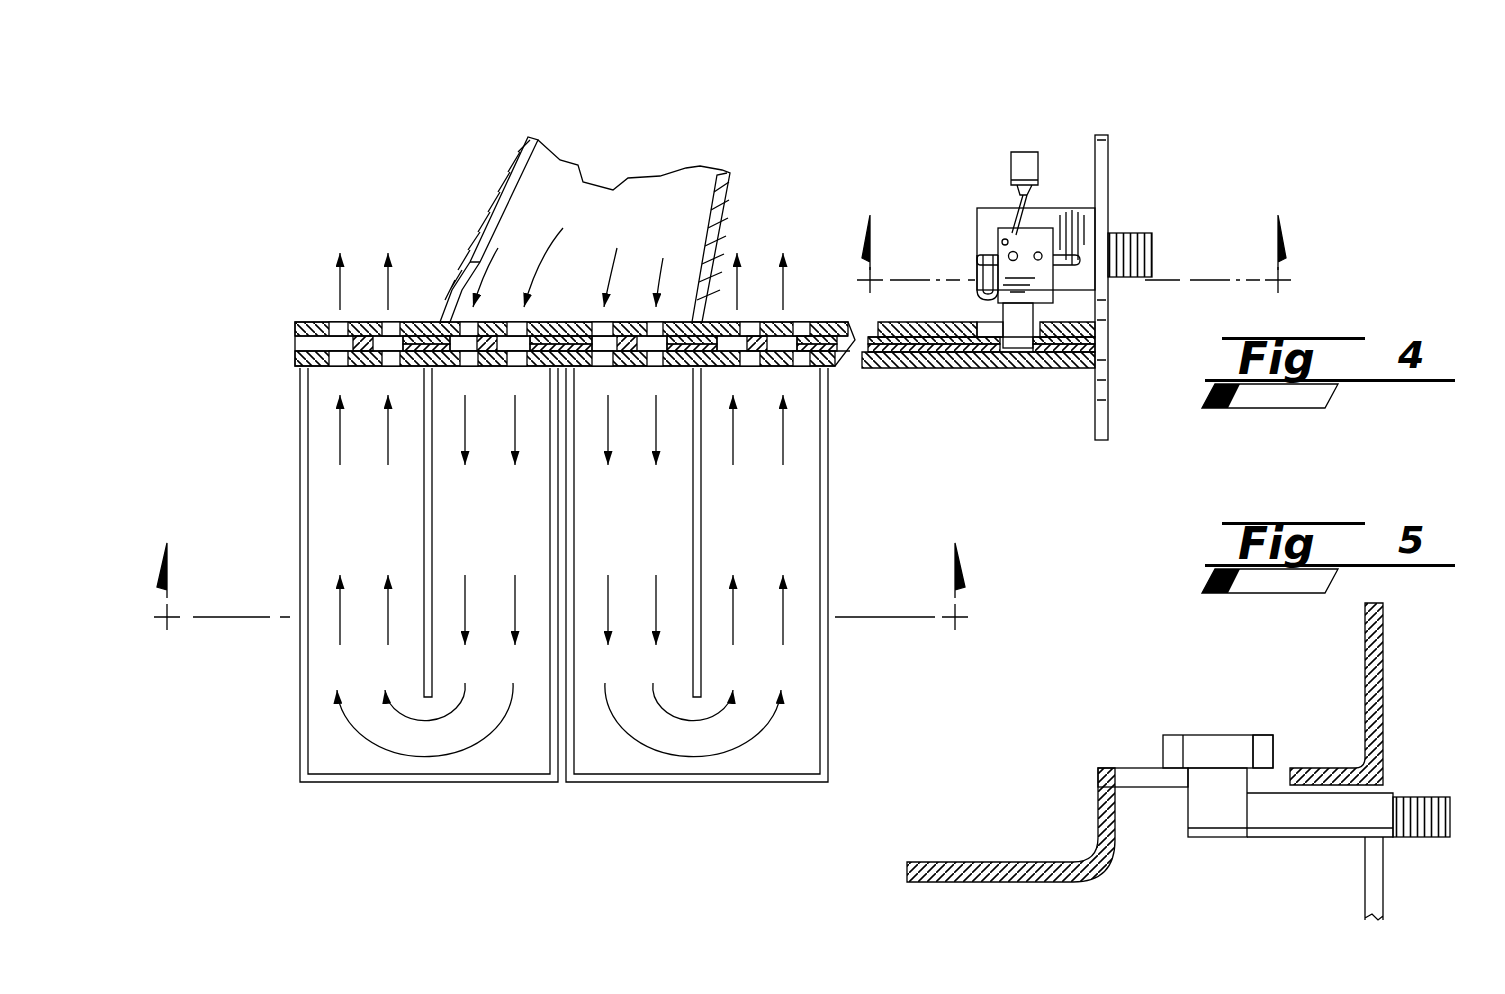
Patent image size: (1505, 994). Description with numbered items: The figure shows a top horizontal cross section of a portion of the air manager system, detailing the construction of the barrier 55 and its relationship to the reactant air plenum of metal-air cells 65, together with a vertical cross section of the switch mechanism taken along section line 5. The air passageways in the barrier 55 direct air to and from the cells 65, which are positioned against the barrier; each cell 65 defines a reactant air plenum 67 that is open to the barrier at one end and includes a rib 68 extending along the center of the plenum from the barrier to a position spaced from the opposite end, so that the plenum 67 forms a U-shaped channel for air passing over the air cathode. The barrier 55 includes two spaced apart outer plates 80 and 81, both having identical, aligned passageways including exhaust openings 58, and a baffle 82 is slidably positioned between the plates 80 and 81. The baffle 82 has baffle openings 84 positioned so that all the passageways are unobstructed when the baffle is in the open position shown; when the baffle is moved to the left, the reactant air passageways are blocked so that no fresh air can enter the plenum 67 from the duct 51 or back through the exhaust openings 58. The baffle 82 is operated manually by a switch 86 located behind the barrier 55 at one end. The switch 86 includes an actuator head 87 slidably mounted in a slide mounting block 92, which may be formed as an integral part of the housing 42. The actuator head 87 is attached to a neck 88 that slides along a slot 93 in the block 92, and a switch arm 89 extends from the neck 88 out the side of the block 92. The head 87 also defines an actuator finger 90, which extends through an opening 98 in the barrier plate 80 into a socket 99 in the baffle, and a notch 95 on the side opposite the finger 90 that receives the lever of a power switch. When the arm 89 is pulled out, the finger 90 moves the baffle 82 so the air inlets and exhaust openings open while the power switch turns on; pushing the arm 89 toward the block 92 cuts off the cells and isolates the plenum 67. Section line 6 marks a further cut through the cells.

In FIG. 4, the housing 42 is at (1108, 152).
In FIG. 5, the housing 42 is at (997, 862).
In FIG. 4, the duct 51 is at (525, 150).
In FIG. 4, the barrier 55 is at (278, 328).
In FIG. 4, the exhaust openings 58 is at (342, 335).
In FIG. 4, the metal-air cells 65 is at (510, 790).
In FIG. 4, the reactant air plenum 67 is at (308, 445).
In FIG. 4, the rib 68 is at (432, 556).
In FIG. 4, the outer plate 80 is at (425, 320).
In FIG. 4, the outer plate 81 is at (410, 372).
In FIG. 4, the baffle 82 is at (350, 343).
In FIG. 4, the baffle openings 84 is at (382, 343).
In FIG. 4, the switch 86 is at (975, 176).
In FIG. 5, the switch 86 is at (1225, 668).
In FIG. 4, the actuator head 87 is at (998, 288).
In FIG. 5, the actuator head 87 is at (1268, 750).
In FIG. 5, the neck 88 is at (1193, 790).
In FIG. 4, the switch arm 89 is at (1128, 237).
In FIG. 5, the switch arm 89 is at (1420, 795).
In FIG. 4, the actuator finger 90 is at (1020, 349).
In FIG. 5, the actuator finger 90 is at (1225, 745).
In FIG. 4, the slide mounting block 92 is at (1077, 247).
In FIG. 4, the slot 93 is at (986, 255).
In FIG. 5, the slot 93 is at (1145, 770).
In FIG. 4, the notch 95 is at (1008, 243).
In FIG. 4, the opening 98 is at (985, 342).
In FIG. 4, the socket 99 is at (1015, 350).
In FIG. 4, the section line 5- 5 is at (1075, 254).
In FIG. 4, the section line 6- 6 is at (559, 586).